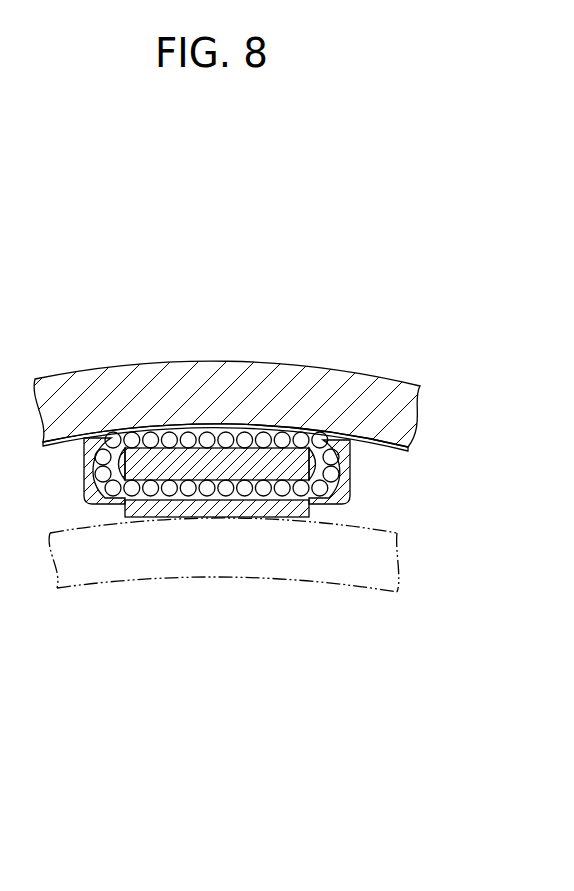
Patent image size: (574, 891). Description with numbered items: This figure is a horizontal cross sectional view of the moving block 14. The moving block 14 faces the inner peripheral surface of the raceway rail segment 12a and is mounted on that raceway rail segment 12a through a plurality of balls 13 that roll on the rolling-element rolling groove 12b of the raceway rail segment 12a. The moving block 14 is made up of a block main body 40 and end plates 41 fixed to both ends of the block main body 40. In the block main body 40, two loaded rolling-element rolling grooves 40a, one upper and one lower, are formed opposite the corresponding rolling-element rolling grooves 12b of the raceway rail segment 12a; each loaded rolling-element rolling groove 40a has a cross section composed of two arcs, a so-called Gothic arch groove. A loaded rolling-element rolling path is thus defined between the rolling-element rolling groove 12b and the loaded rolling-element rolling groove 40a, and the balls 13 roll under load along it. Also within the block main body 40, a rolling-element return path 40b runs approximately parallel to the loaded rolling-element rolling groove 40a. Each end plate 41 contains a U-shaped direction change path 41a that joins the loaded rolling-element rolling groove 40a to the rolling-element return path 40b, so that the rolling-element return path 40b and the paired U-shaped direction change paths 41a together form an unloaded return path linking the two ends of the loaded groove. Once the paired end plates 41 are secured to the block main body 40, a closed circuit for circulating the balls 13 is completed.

The raceway rail segment 12a is at (232, 387).
The rolling-element rolling groove 12b is at (263, 430).
The ball 13 is at (173, 432).
The moving block 14 is at (281, 517).
The block main body 40 is at (280, 502).
The loaded rolling-element rolling groove 40a is at (273, 424).
The rolling-element return path 40b is at (271, 503).
The end plate 41 is at (281, 558).
The U-shaped direction change path 41a is at (352, 476).